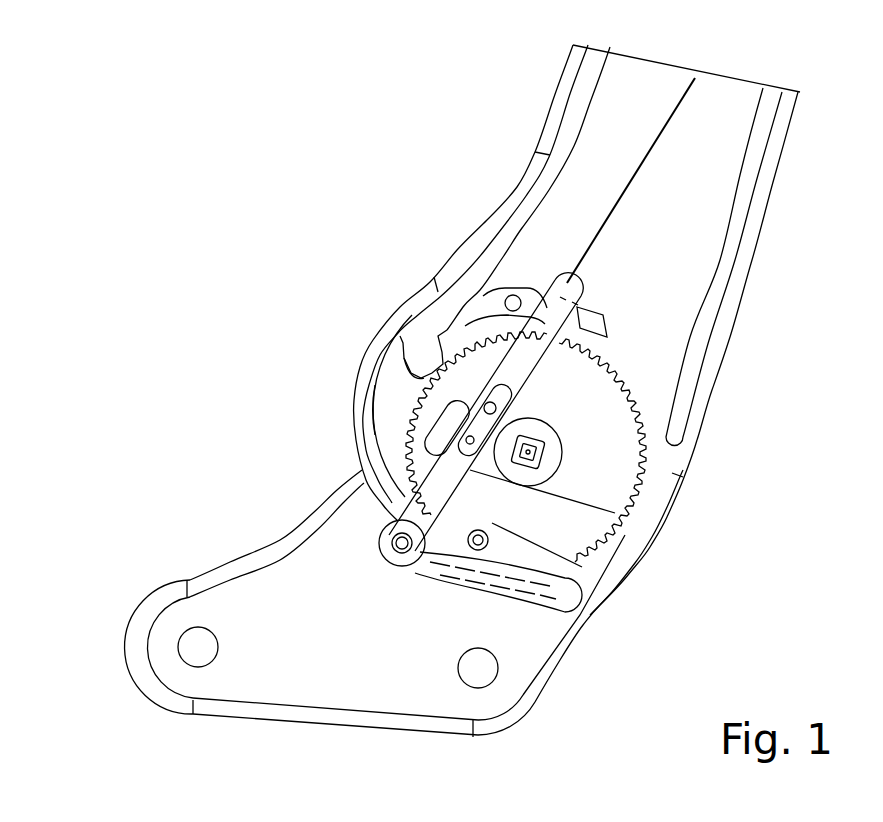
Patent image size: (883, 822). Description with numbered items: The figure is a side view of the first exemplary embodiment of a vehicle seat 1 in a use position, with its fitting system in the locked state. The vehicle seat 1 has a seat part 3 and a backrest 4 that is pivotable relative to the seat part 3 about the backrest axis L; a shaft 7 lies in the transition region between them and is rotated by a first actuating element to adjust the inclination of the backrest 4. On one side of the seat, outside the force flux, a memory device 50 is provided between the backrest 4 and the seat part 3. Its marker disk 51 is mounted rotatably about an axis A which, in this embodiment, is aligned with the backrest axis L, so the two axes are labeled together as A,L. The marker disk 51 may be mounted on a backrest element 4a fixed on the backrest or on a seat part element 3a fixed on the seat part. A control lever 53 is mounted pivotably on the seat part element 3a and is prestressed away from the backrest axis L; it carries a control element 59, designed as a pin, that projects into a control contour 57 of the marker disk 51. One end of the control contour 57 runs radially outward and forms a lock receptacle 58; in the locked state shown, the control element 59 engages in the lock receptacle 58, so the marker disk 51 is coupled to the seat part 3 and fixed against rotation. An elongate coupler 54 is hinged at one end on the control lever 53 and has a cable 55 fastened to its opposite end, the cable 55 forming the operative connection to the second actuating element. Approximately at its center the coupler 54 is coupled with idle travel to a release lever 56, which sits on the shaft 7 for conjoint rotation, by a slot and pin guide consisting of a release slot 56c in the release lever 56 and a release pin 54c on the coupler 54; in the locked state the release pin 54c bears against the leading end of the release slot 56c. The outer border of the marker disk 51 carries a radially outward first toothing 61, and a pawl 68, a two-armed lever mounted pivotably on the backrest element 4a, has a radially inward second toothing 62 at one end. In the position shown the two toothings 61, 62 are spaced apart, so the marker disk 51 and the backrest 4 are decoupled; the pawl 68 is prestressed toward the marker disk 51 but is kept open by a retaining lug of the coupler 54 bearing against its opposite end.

The vehicle seat 1 is at (190, 250).
The seat part 3 is at (186, 577).
The seat part element 3a is at (163, 647).
The backrest 4 is at (560, 90).
The backrest element 4a is at (718, 260).
The shaft 7 is at (532, 468).
The memory device 50 is at (400, 420).
The marker disk 51 is at (617, 477).
The control lever 53 is at (492, 580).
The coupler 54 is at (548, 317).
The release pin 54c is at (493, 403).
The cable 55 is at (660, 135).
The release lever 56 is at (548, 442).
The release slot 56c is at (468, 432).
The control contour 57 is at (447, 430).
The lock receptacle 58 is at (497, 523).
The control element 59 is at (483, 543).
The first toothing 61 is at (413, 402).
The second toothing 62 is at (420, 377).
The pawl 68 is at (443, 328).
The axis of the marker disk and backrest axis A,L is at (532, 452).